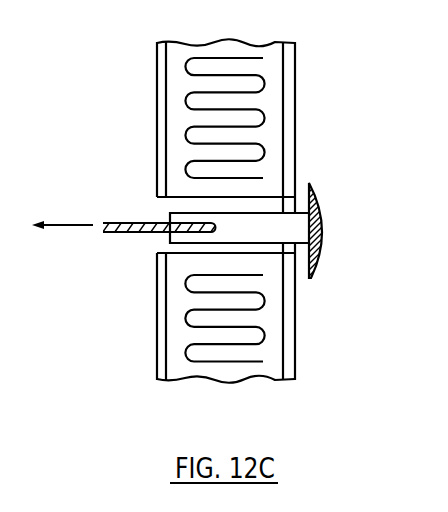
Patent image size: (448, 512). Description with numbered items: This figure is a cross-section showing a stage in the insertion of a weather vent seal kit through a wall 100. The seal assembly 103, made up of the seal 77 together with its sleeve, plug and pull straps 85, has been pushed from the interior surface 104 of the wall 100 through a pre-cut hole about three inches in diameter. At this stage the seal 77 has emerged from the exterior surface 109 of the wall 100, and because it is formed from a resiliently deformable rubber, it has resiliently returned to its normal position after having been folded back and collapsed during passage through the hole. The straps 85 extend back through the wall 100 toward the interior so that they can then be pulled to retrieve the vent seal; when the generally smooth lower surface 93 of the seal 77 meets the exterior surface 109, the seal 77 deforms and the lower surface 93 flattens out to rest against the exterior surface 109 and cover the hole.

The interior surface 104 is at (157, 67).
The wall 100 is at (182, 366).
The exterior surface 109 is at (297, 66).
The seal assembly 103 is at (319, 184).
The weather seal 77 is at (329, 243).
The lower surface 93 is at (309, 271).
The pull straps 85 is at (140, 232).